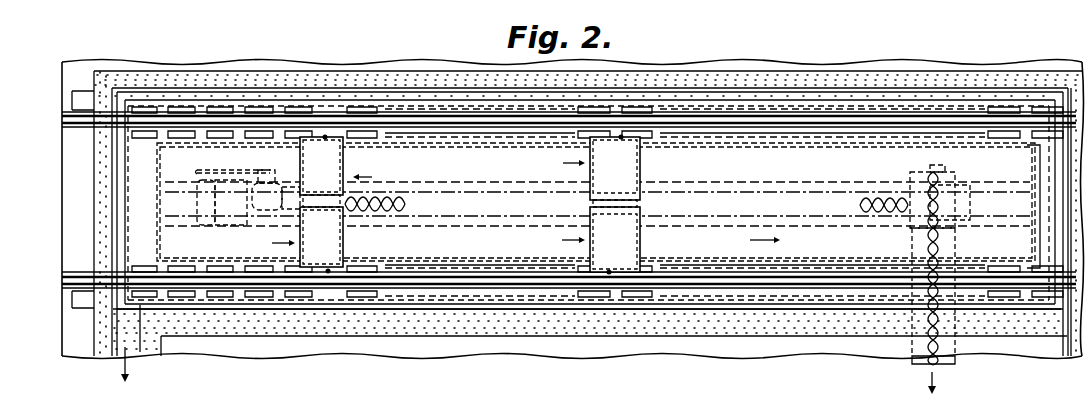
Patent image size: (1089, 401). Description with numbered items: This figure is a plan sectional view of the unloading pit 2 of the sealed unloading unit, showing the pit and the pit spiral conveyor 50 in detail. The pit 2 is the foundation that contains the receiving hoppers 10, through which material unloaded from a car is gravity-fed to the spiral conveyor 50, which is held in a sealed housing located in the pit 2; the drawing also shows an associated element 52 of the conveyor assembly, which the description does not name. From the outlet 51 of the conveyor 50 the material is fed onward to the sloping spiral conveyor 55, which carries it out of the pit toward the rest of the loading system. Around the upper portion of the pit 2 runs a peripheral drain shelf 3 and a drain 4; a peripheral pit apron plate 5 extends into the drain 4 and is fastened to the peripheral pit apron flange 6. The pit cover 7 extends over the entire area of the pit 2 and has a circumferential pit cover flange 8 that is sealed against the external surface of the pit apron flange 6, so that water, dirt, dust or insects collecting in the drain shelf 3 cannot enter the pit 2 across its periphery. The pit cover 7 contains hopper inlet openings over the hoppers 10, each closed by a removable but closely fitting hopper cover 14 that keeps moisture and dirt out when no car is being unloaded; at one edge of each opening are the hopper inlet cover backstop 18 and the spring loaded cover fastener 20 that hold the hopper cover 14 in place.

The pit 2 is at (197, 107).
The peripheral drain shelf 3 is at (247, 77).
The drain 4 is at (303, 98).
The peripheral pit apron plate 5 is at (1028, 140).
The peripheral pit apron flange 6 is at (161, 172).
The pit cover 7 is at (178, 186).
The pit cover flange 8 is at (160, 137).
The receiving hopper 10 is at (515, 204).
The hopper cover 14 is at (345, 163).
The hopper inlet cover backstop 18 is at (312, 195).
The spring loaded cover fastener 20 is at (325, 138).
The spiral conveyor 50 is at (395, 226).
The outlet 51 is at (972, 218).
The motor assembly 52 is at (275, 180).
The sloping spiral conveyor 55 is at (962, 240).